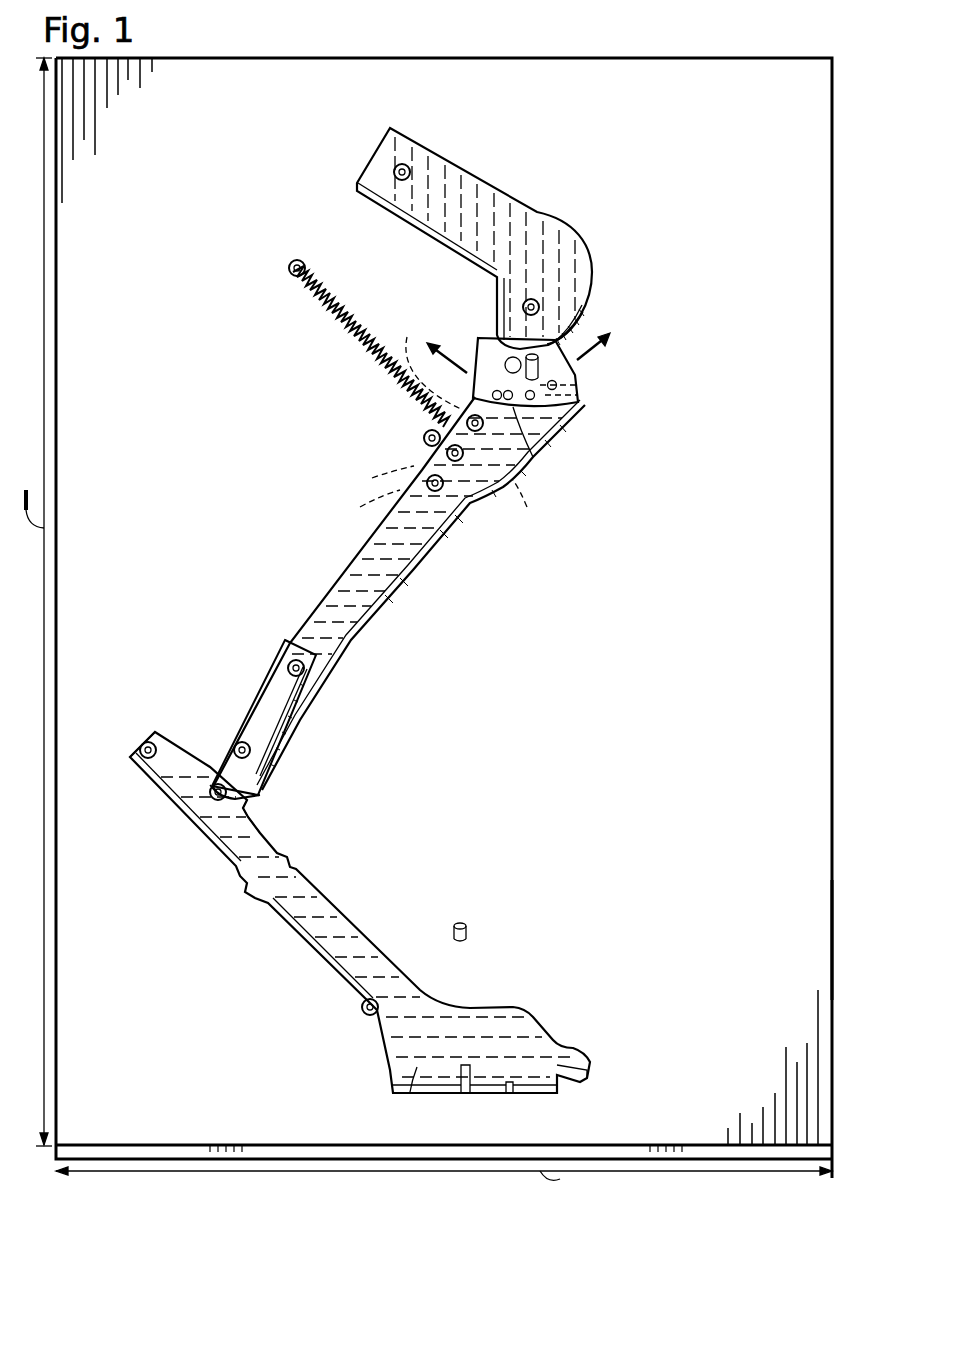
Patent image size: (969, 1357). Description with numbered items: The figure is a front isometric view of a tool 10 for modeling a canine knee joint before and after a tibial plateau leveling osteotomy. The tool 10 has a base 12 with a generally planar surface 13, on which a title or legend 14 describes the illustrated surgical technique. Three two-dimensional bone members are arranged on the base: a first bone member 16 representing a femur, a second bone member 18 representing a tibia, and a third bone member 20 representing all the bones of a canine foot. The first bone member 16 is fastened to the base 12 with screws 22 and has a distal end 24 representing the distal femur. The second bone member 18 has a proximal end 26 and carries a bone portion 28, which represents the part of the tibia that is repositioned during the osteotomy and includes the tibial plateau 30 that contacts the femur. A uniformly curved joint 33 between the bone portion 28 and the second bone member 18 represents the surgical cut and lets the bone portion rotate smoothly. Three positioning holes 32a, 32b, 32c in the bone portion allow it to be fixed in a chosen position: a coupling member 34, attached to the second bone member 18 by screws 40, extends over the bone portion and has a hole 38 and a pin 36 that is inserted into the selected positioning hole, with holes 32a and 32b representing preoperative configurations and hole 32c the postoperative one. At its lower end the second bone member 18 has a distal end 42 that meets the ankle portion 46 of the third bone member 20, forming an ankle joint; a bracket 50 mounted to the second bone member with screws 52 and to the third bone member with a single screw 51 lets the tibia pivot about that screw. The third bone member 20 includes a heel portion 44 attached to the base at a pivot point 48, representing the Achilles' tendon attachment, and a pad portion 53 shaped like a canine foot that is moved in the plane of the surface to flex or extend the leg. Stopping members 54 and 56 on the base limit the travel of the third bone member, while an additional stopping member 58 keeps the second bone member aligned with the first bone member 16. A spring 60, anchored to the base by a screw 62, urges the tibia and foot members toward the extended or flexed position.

The tool 10 is at (693, 42).
The base 12 is at (841, 1092).
The planar surface 13 is at (808, 903).
The title or legend 14 is at (605, 720).
The first bone member 16 is at (455, 165).
The second bone member 18 is at (345, 578).
The third bone member 20 is at (298, 915).
The screws 22 is at (394, 180).
The distal end 24 is at (565, 335).
The proximal end 26 is at (585, 412).
The bone portion 28 is at (577, 350).
The tibial plateau 30 is at (560, 345).
The positioning hole 32a is at (536, 398).
The positioning hole 32b is at (501, 401).
The positioning hole 32c is at (558, 386).
The curved joint 33 is at (513, 400).
The coupling member 34 is at (527, 504).
The pin 36 is at (483, 343).
The hole 38 is at (600, 398).
The screws 40 is at (401, 415).
The distal end 42 is at (305, 728).
The heel portion 44 is at (128, 762).
The ankle portion 46 is at (258, 805).
The pivot point 48 is at (152, 742).
The bracket 50 is at (280, 700).
The screw 51 is at (212, 786).
The screws 52 is at (289, 645).
The pad portion 53 is at (413, 1070).
The stopping member 54 is at (366, 1018).
The stopping member 56 is at (467, 920).
The stopping member 58 is at (424, 438).
The spring 60 is at (320, 300).
The screw 62 is at (293, 262).